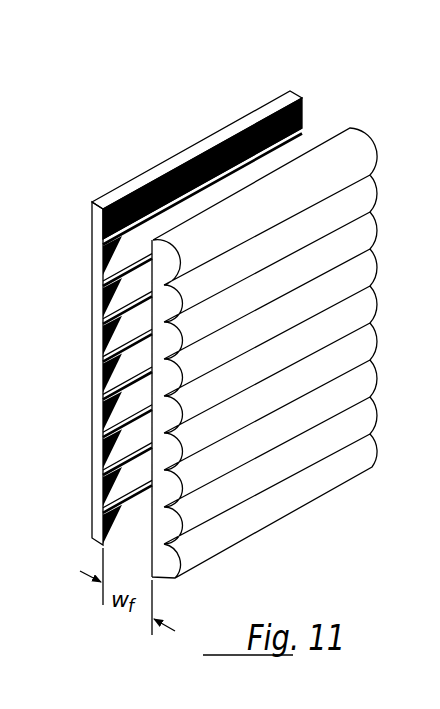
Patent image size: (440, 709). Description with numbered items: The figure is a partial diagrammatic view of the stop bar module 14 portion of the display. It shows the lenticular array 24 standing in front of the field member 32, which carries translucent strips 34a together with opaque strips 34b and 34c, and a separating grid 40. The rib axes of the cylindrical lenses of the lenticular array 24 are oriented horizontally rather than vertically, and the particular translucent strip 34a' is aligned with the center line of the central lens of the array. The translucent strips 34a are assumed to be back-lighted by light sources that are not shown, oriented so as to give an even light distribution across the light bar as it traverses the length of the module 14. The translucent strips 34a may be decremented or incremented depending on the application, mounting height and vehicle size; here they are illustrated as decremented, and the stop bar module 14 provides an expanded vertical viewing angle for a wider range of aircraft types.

The stop bar module 14 is at (204, 344).
The lenticular array 24 is at (303, 504).
The field member 32 is at (88, 450).
The translucent strips 34a is at (169, 341).
The translucent strip 34a' is at (92, 367).
The opaque strips 34b is at (122, 198).
The opaque strips 34c is at (107, 243).
The separating grid 40 is at (300, 147).